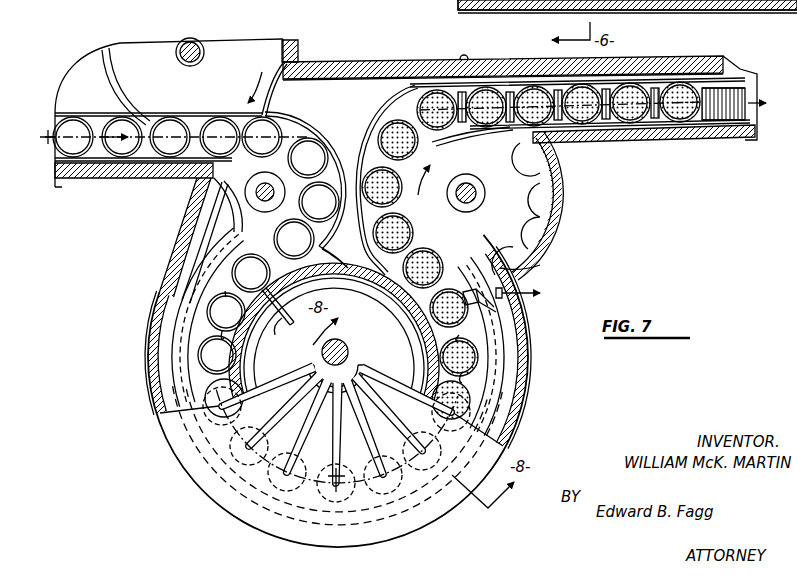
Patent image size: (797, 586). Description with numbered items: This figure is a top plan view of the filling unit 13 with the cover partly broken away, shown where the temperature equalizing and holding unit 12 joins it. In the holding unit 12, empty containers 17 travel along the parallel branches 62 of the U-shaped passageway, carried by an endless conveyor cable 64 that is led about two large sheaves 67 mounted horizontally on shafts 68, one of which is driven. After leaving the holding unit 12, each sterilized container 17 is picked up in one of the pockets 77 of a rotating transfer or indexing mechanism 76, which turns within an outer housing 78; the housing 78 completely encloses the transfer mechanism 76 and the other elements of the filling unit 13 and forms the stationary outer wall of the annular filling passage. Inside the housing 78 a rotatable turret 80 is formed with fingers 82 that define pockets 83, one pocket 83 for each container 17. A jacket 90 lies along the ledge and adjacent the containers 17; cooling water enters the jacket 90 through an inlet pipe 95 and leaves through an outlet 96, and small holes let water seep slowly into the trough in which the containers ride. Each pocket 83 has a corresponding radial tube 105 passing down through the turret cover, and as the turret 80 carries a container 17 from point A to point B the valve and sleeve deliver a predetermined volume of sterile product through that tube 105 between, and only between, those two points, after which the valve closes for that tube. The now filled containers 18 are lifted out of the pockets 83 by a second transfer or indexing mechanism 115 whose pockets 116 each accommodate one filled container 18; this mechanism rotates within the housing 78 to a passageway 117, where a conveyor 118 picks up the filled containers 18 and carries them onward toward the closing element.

The temperature equalizing and holding unit 12 is at (106, 50).
The filling unit 13 is at (153, 412).
The empty containers 17 is at (755, 11).
The filled containers 18 is at (413, 235).
The parallel branches 62 is at (682, 11).
The endless conveyor cable 64 is at (115, 125).
The large sheaves 67 is at (143, 48).
The shafts 68 is at (193, 42).
The transfer or indexing mechanism 76 is at (226, 186).
The pockets 77 is at (236, 206).
The outer housing 78 is at (190, 246).
The rotatable turret 80 is at (442, 508).
The fingers 82 is at (175, 350).
The pockets 83 is at (215, 350).
The jacket 90 is at (205, 278).
The inlet pipe 95 is at (270, 340).
The outlet 96 is at (508, 303).
The radial tubes 105 is at (266, 488).
The transfer or indexing mechanism 115 is at (558, 222).
The pockets 116 is at (556, 186).
The passageway 117 is at (728, 122).
The conveyor 118 is at (728, 102).
The point A is at (245, 244).
The point B is at (500, 295).